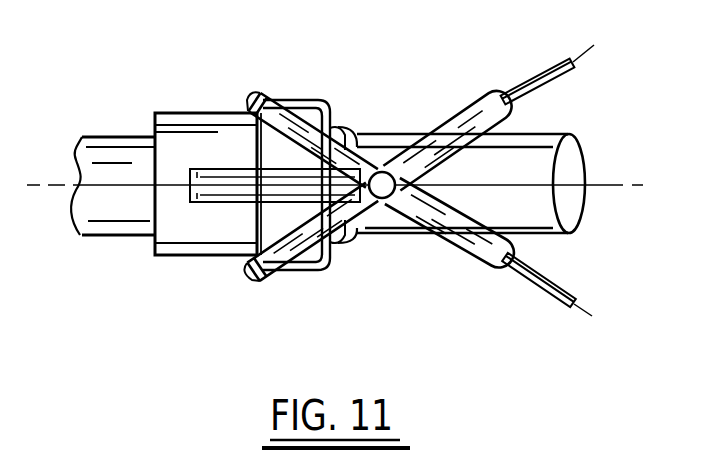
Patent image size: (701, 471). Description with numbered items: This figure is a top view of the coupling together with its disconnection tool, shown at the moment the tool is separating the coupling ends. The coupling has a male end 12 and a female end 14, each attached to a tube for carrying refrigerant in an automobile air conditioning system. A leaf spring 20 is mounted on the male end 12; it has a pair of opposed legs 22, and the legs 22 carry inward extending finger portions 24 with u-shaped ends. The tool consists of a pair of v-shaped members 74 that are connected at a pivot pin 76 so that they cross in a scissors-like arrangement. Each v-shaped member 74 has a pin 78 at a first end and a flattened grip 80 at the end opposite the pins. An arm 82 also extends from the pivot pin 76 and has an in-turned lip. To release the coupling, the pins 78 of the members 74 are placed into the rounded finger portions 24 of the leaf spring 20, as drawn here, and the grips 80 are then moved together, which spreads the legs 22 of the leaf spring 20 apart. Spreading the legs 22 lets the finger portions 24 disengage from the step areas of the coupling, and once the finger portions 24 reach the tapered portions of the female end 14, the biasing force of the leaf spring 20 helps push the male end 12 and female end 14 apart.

The male end 12 is at (542, 131).
The female end 14 is at (118, 137).
The leaf spring 20 is at (313, 100).
The legs 22 is at (310, 273).
The finger portions 24 is at (248, 100).
The v-shaped members 74 is at (462, 100).
The pivot pin 76 is at (383, 168).
The pin 78 is at (243, 273).
The flattened grip 80 is at (548, 280).
The arm 82 is at (212, 168).